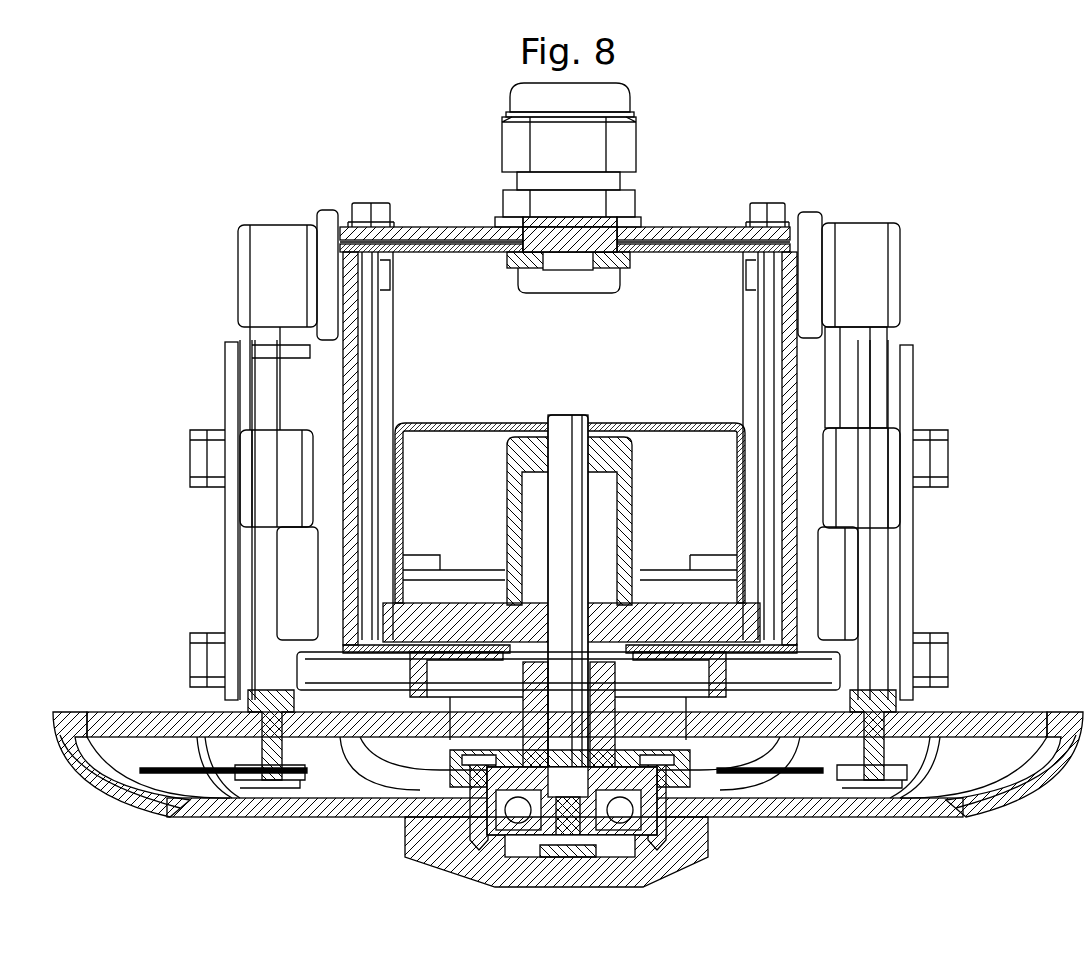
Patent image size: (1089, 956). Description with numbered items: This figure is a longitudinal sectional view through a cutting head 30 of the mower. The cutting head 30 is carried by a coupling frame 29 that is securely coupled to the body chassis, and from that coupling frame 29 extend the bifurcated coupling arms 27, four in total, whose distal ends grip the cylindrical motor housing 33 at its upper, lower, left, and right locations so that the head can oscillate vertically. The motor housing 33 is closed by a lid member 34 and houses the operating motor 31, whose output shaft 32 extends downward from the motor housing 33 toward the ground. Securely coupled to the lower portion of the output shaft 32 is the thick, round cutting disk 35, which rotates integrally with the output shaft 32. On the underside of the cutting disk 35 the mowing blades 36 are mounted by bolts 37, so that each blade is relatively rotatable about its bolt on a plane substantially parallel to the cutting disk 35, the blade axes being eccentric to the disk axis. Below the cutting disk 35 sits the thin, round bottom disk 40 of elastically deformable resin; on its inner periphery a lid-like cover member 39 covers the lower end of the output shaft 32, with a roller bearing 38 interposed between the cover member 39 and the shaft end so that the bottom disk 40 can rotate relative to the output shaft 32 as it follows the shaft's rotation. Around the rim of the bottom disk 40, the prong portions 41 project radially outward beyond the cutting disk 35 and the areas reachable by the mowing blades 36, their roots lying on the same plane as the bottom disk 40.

The coupling arms 27 is at (270, 365).
The coupling frame 29 is at (225, 400).
The cutting head 30 is at (1008, 190).
The operating motor 31 is at (688, 462).
The output shaft 32 is at (566, 428).
The motor housing 33 is at (792, 368).
The lid member 34 is at (703, 228).
The cutting disk 35 is at (990, 712).
The mowing blades 36 is at (197, 777).
The bolts 37 is at (298, 782).
The roller bearing 38 is at (497, 835).
The cover member 39 is at (658, 884).
The bottom disk 40 is at (873, 818).
The prong portions 41 is at (1052, 778).